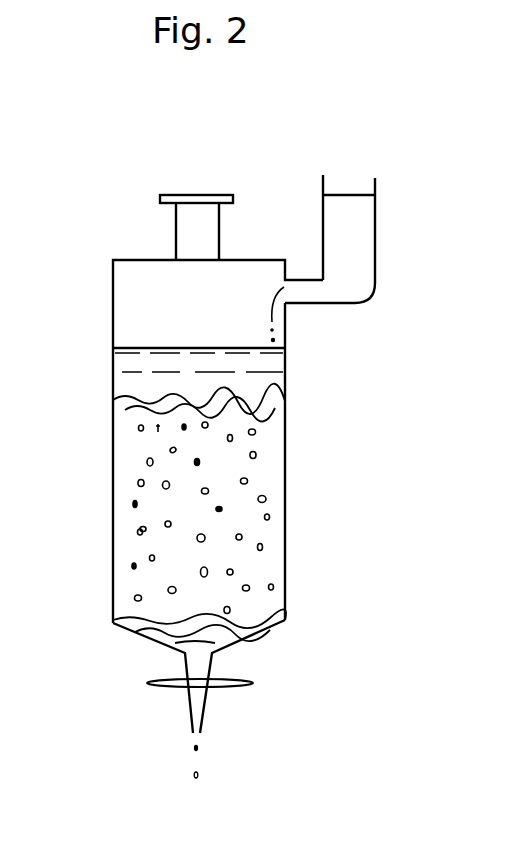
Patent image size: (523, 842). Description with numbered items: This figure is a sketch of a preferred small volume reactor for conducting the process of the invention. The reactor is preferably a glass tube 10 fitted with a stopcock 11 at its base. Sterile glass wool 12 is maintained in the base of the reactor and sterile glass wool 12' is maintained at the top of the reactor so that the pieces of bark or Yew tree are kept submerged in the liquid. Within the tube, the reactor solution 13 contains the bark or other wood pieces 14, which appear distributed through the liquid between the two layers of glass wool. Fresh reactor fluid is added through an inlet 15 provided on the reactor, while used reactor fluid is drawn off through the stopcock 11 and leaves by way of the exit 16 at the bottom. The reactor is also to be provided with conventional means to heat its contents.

The glass tube 10 is at (112, 378).
The stopcock 11 is at (225, 687).
The sterile glass wool 12 is at (235, 611).
The sterile glass wool 12' is at (236, 403).
The reactor solution 13 is at (278, 377).
The bark or other wood pieces 14 is at (264, 499).
The inlet 15 is at (360, 223).
The exit 16 is at (192, 740).